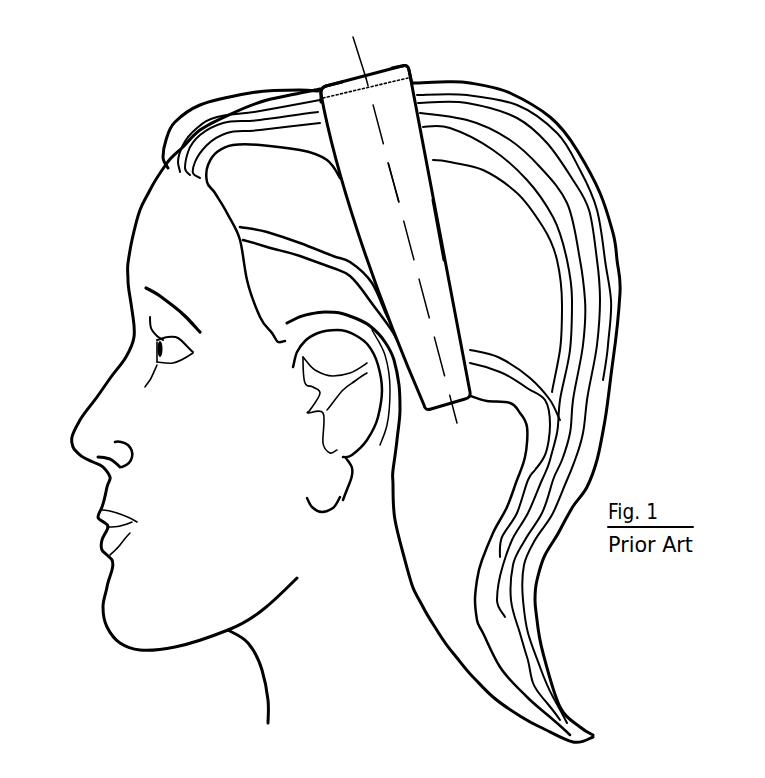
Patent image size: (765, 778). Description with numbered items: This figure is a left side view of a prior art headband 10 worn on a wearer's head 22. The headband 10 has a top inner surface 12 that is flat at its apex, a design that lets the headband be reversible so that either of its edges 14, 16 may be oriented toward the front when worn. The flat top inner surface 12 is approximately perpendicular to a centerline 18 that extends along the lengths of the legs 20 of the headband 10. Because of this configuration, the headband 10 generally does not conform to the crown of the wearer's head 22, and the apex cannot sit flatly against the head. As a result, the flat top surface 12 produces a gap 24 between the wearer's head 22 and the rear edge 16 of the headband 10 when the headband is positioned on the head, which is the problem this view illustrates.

The headband 10 is at (358, 73).
The top inner surface 12 is at (390, 78).
The edge 14 is at (318, 88).
The rear edge 16 is at (409, 65).
The centerline 18 is at (393, 185).
The legs 20 is at (425, 233).
The wearer's head 22 is at (143, 238).
The gap 24 is at (412, 80).